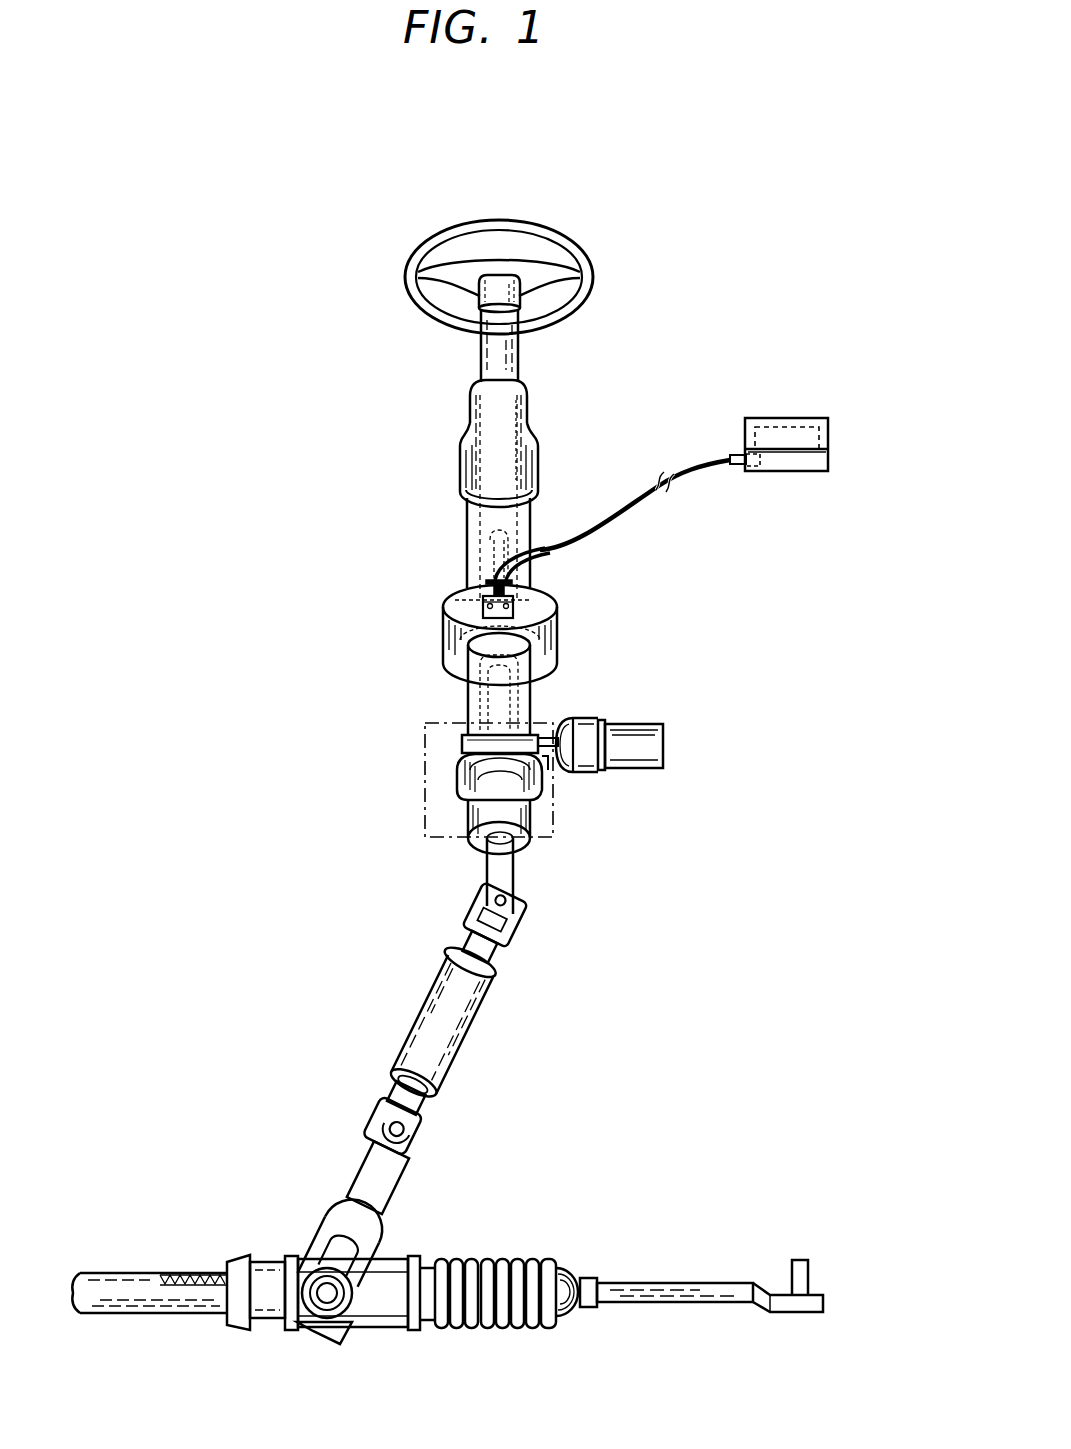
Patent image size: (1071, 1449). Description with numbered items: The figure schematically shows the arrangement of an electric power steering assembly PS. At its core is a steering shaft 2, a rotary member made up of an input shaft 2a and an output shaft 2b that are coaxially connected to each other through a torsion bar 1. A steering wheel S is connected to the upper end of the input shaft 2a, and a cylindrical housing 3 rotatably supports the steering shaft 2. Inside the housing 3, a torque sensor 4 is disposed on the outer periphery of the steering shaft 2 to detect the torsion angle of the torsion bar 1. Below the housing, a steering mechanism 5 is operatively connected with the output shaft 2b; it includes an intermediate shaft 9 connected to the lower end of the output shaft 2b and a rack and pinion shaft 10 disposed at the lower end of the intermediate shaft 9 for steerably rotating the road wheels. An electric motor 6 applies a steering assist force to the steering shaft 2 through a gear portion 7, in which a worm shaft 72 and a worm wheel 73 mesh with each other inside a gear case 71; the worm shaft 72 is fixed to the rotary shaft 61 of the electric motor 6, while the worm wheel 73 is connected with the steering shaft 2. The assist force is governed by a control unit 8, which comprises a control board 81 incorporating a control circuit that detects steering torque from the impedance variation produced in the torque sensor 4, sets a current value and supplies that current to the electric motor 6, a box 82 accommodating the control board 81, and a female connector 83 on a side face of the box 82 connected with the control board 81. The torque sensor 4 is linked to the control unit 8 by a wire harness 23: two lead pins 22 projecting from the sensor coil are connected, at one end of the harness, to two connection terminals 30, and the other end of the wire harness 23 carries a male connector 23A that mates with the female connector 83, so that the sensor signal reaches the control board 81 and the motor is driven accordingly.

The electric power steering assembly PS is at (612, 196).
The steering wheel S is at (594, 268).
The torsion bar 1 is at (480, 556).
The steering shaft 2 is at (474, 377).
The input shaft 2a is at (496, 352).
The output shaft 2b is at (497, 890).
The cylindrical housing 3 is at (466, 711).
The torque sensor 4 is at (560, 608).
The steering mechanism 5 is at (364, 1124).
The electric motor 6 is at (664, 740).
The gear portion 7 is at (340, 705).
The gear case 71 is at (425, 822).
The worm shaft 72 is at (462, 746).
The worm wheel 73 is at (460, 790).
The control unit 8 is at (794, 412).
The control board 81 is at (822, 436).
The box 82 is at (808, 472).
The female connector 83 is at (754, 472).
The intermediate shaft 9 is at (420, 1020).
The rack and pinion shaft 10 is at (130, 1272).
The lead pins 22 is at (468, 614).
The wire harness 23 is at (624, 498).
The male connector 23A is at (738, 456).
The connection terminals 30 is at (498, 599).
The rotary shaft 61 is at (548, 754).